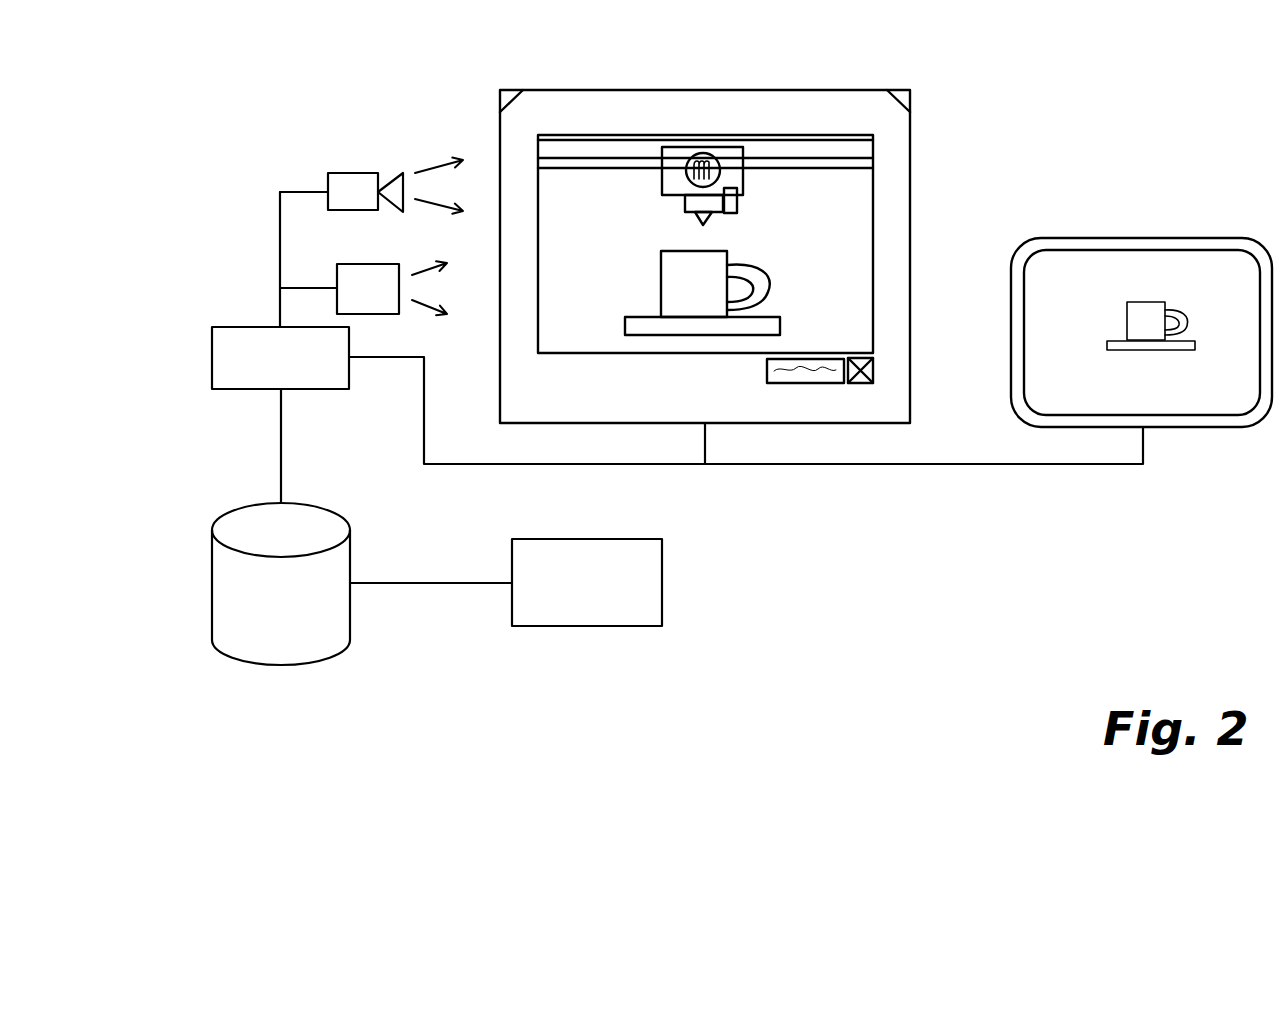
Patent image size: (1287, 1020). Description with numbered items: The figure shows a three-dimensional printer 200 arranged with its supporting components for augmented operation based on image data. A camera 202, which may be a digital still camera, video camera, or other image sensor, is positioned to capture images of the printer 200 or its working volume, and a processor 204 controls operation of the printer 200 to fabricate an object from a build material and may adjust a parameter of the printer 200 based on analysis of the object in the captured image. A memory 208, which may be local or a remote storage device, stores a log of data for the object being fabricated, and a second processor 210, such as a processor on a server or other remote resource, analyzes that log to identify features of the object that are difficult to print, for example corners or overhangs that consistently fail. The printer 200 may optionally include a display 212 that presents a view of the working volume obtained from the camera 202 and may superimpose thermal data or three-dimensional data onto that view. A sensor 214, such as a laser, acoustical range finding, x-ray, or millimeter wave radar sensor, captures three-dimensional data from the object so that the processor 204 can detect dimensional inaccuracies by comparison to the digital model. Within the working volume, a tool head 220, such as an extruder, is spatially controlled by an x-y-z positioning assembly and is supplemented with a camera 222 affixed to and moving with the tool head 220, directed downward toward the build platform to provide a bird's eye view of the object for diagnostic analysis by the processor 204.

The printer 200 is at (910, 203).
The camera 202 is at (352, 173).
The processor 204 is at (212, 370).
The memory 208 is at (212, 560).
The second processor 210 is at (592, 626).
The display 212 is at (1133, 238).
The sensor 214 is at (378, 264).
The tool head 220 is at (675, 197).
The camera 222 is at (737, 200).